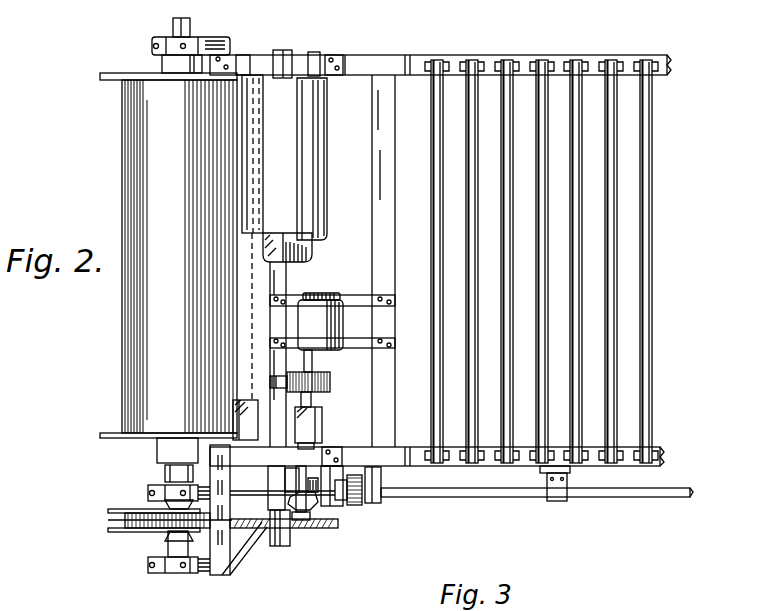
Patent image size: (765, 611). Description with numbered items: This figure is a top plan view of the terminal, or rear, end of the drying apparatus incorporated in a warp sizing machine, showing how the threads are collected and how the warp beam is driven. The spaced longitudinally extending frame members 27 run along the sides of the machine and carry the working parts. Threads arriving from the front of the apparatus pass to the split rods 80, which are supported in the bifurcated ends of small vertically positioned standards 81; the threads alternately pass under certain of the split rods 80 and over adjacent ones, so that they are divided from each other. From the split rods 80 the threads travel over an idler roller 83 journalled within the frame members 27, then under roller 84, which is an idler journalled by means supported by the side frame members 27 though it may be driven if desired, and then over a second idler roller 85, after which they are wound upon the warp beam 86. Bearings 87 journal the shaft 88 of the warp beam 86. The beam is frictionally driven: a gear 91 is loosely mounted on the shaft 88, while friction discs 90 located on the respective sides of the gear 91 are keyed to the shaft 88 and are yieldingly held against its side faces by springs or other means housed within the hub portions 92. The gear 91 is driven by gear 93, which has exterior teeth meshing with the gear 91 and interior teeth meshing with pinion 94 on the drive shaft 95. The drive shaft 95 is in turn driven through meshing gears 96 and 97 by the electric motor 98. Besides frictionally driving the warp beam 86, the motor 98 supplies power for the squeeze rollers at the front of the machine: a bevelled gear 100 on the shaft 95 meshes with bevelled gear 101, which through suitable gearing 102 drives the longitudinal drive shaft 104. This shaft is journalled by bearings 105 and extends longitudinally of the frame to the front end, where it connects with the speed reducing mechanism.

The longitudinal frame member 27 is at (379, 55).
The split rods 80 is at (630, 181).
The standards 81 is at (648, 452).
The idler roller 83 is at (327, 143).
The roller 84 is at (314, 249).
The second idler roller 85 is at (243, 118).
The warp beam 86 is at (135, 352).
The bearings 87 is at (167, 40).
The shaft 88 is at (190, 24).
The friction discs 90 is at (140, 509).
The gear 91 is at (107, 520).
The hub portions 92 is at (190, 548).
The gear 93 is at (274, 547).
The pinion 94 is at (303, 530).
The drive shaft 95 is at (296, 486).
The gear 96 is at (317, 404).
The gear 97 is at (343, 380).
The electric motor 98 is at (335, 310).
The bevelled gear 100 is at (304, 514).
The bevelled gear 101 is at (314, 502).
The gearing 102 is at (360, 505).
The longitudinal drive shaft 104 is at (655, 497).
The bearings 105 is at (556, 492).